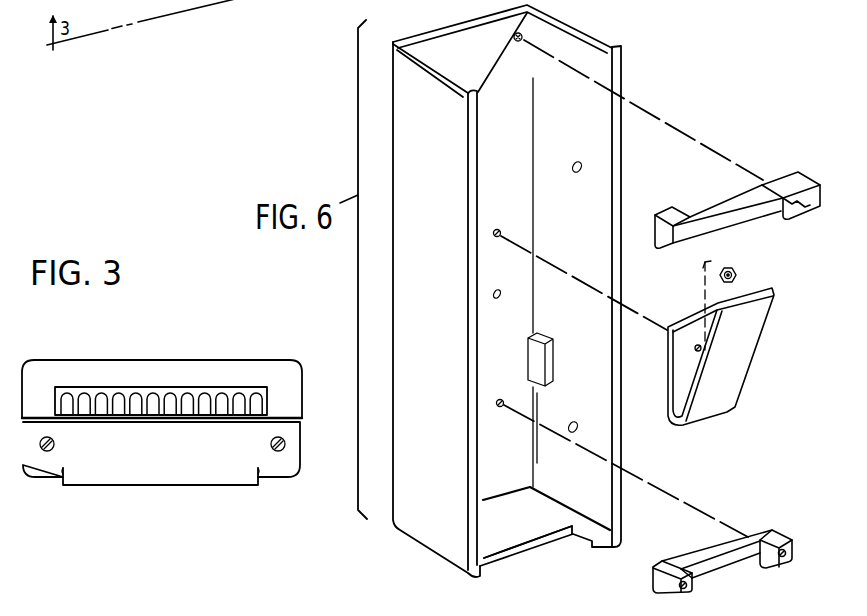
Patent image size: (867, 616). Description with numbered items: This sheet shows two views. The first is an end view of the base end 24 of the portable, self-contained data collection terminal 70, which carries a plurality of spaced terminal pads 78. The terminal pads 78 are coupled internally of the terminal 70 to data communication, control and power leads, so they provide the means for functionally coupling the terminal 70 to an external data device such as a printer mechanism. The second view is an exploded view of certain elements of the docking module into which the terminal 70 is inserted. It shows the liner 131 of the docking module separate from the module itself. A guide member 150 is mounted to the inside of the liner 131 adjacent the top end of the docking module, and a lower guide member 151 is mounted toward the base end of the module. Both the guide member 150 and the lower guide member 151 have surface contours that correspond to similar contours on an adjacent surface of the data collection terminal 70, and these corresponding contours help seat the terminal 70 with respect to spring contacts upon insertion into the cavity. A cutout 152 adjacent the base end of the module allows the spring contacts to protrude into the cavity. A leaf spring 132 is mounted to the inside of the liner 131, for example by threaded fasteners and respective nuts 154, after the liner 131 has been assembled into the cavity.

In FIG. 3, the data collection terminal 70 is at (24, 465).
In FIG. 3, the base end 24 is at (185, 486).
In FIG. 3, the terminal pads 78 is at (188, 394).
In FIG. 6, the liner 131 is at (623, 72).
In FIG. 6, the cutout 152 is at (507, 556).
In FIG. 6, the guide member 150 is at (735, 217).
In FIG. 6, the nuts 154 is at (740, 273).
In FIG. 6, the leaf spring 132 is at (737, 370).
In FIG. 6, the lower guide member 151 is at (768, 532).